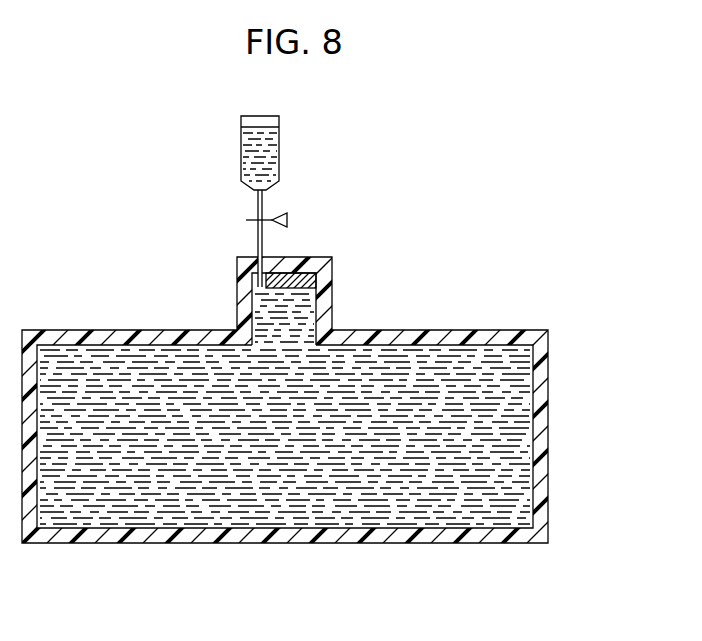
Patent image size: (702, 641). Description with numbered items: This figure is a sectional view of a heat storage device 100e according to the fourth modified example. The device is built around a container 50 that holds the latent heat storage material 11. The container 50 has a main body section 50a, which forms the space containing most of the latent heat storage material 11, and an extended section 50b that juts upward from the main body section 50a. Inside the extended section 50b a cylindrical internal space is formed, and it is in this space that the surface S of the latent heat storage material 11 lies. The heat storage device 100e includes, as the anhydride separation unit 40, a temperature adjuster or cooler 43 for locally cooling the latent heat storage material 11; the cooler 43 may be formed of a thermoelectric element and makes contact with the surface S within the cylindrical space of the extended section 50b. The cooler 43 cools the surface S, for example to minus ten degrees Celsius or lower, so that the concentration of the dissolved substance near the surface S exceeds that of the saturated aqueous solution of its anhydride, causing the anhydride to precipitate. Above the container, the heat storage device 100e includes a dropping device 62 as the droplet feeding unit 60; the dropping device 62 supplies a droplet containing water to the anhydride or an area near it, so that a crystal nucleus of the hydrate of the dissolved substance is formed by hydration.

The heat storage device 100e is at (432, 95).
The container 50 is at (641, 300).
The main body section 50a is at (540, 338).
The extended section 50b is at (322, 317).
The latent heat storage material 11 is at (496, 431).
The dropping device 62 is at (224, 119).
The droplet feeding unit 60 is at (208, 190).
The temperature adjuster (cooler) 43 is at (291, 280).
The anhydride separation unit 40 is at (296, 235).
The surface of the latent heat storage material S is at (304, 277).